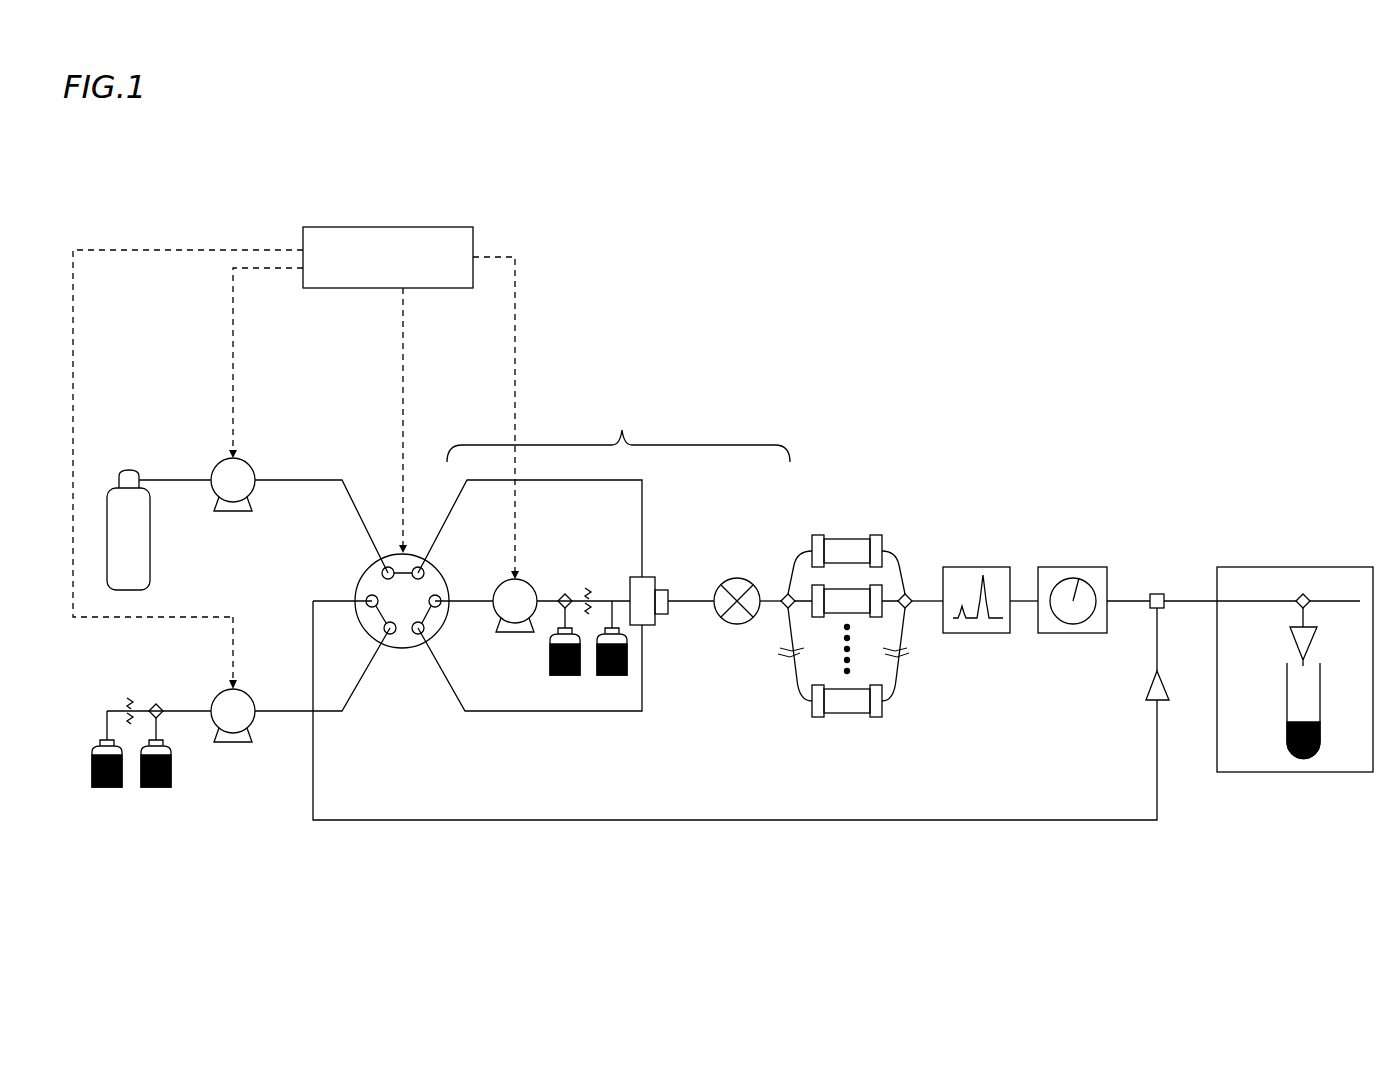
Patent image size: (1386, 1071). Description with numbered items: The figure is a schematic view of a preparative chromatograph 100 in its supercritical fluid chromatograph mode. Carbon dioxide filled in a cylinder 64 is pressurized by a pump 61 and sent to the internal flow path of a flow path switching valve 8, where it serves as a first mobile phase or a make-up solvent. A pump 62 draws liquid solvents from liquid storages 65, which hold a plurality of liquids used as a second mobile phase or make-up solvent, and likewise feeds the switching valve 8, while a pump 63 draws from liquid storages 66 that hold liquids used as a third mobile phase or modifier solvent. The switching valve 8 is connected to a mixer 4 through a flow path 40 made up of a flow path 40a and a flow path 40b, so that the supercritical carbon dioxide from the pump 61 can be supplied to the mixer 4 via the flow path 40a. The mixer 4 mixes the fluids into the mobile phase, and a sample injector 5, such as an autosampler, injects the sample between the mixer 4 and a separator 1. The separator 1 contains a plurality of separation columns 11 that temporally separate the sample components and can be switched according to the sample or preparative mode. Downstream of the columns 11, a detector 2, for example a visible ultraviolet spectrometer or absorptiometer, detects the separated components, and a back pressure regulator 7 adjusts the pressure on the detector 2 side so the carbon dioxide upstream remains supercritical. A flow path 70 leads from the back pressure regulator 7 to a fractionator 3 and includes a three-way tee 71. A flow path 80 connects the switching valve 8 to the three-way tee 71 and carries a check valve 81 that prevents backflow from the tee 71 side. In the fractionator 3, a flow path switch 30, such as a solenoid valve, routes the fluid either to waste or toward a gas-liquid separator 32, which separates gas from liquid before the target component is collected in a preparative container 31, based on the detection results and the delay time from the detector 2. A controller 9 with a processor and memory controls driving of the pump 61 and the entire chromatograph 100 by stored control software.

The preparative chromatograph 100 is at (146, 210).
The controller 9 is at (475, 240).
The pump 61 is at (217, 468).
The pump 62 is at (217, 697).
The pump 63 is at (528, 580).
The cylinder 64 is at (150, 538).
The liquid storages 65 is at (172, 762).
The liquid storages 66 is at (548, 656).
The flow path switching valve 8 is at (360, 582).
The flow path 40 is at (618, 430).
The flow path 40a is at (578, 484).
The flow path 40b is at (584, 714).
The mixer 4 is at (657, 576).
The sample injector 5 is at (740, 579).
The separator 1 is at (862, 600).
The separation columns 11 is at (848, 533).
The detector 2 is at (983, 567).
The back pressure regulator 7 is at (1078, 567).
The three-way tee 71 is at (1158, 592).
The flow path 70 is at (1186, 598).
The fractionator 3 is at (1295, 644).
The flow path switch 30 is at (1308, 596).
The preparative container 31 is at (1322, 685).
The gas-liquid separator 32 is at (1290, 638).
The check valve 81 is at (1142, 687).
The flow path 80 is at (908, 822).